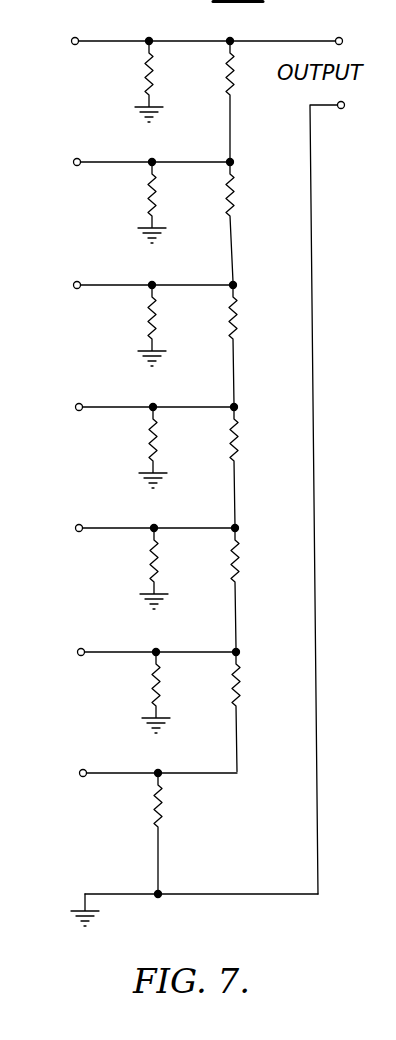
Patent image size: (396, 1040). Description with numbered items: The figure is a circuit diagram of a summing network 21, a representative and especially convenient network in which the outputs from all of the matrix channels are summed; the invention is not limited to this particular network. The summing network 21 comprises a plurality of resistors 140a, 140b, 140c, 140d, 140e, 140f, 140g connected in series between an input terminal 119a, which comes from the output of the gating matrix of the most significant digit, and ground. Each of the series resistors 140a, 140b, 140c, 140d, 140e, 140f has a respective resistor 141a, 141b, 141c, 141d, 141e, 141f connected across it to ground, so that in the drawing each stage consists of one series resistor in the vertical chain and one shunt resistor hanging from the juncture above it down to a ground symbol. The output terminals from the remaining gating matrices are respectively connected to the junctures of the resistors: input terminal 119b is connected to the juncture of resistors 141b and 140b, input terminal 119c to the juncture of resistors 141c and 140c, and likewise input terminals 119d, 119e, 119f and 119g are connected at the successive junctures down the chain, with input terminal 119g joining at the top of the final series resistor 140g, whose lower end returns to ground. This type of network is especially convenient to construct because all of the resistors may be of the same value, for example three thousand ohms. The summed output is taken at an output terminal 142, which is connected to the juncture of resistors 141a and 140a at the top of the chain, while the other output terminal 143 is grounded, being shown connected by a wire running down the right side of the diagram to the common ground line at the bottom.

The input terminal 119a is at (76, 37).
The input terminal 119b is at (76, 158).
The input terminal 119c is at (77, 281).
The input terminal 119d is at (79, 403).
The input terminal 119e is at (79, 524).
The input terminal 119f is at (81, 648).
The input terminal 119g is at (83, 769).
The resistor 141a is at (146, 74).
The resistor 141b is at (149, 191).
The resistor 141c is at (149, 316).
The resistor 141d is at (150, 441).
The resistor 141e is at (150, 556).
The resistor 141f is at (153, 682).
The resistor 140a is at (234, 85).
The resistor 140b is at (235, 208).
The resistor 140c is at (238, 330).
The resistor 140d is at (239, 452).
The resistor 140e is at (240, 568).
The resistor 140f is at (242, 680).
The resistor 140g is at (162, 808).
The summing network 21 is at (222, 34).
The output terminal 142 is at (338, 37).
The output terminal 143 is at (340, 108).